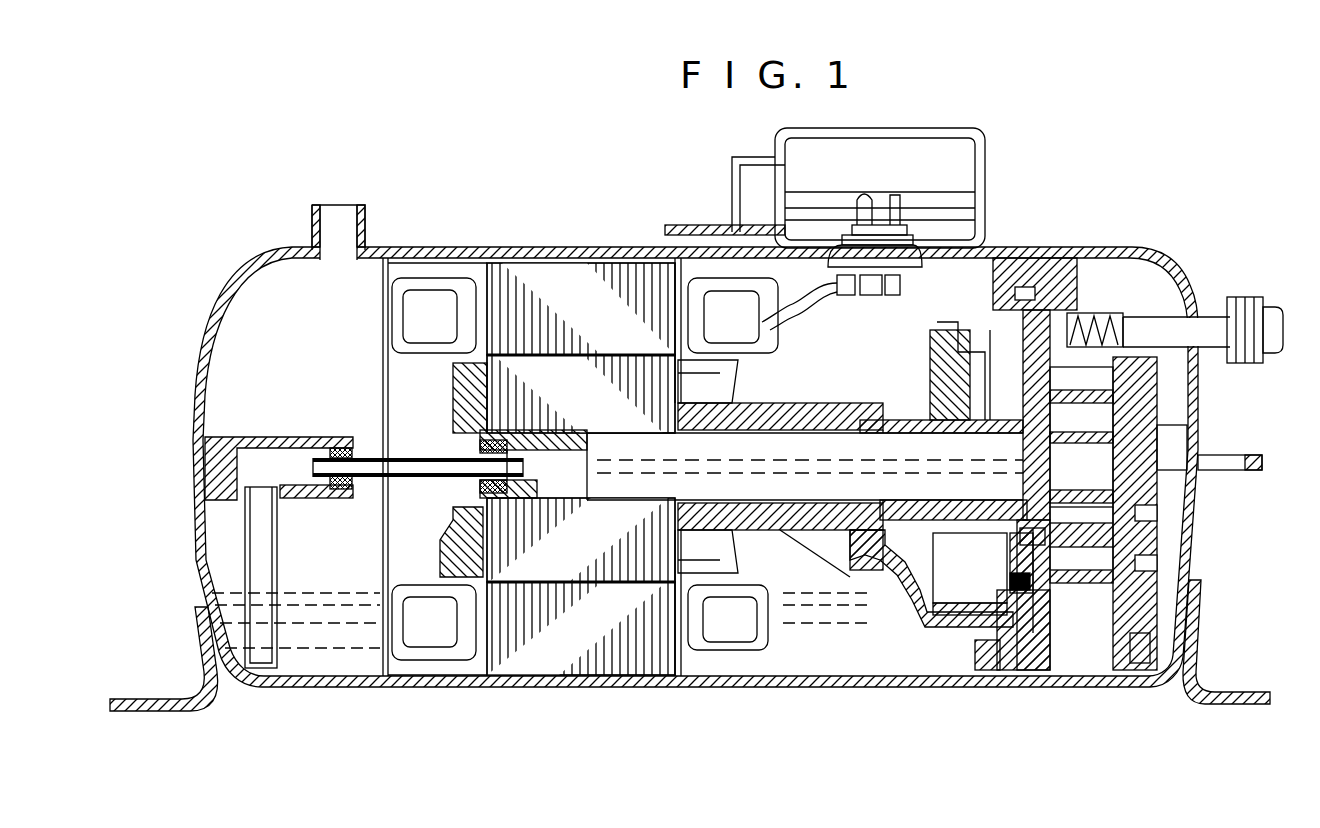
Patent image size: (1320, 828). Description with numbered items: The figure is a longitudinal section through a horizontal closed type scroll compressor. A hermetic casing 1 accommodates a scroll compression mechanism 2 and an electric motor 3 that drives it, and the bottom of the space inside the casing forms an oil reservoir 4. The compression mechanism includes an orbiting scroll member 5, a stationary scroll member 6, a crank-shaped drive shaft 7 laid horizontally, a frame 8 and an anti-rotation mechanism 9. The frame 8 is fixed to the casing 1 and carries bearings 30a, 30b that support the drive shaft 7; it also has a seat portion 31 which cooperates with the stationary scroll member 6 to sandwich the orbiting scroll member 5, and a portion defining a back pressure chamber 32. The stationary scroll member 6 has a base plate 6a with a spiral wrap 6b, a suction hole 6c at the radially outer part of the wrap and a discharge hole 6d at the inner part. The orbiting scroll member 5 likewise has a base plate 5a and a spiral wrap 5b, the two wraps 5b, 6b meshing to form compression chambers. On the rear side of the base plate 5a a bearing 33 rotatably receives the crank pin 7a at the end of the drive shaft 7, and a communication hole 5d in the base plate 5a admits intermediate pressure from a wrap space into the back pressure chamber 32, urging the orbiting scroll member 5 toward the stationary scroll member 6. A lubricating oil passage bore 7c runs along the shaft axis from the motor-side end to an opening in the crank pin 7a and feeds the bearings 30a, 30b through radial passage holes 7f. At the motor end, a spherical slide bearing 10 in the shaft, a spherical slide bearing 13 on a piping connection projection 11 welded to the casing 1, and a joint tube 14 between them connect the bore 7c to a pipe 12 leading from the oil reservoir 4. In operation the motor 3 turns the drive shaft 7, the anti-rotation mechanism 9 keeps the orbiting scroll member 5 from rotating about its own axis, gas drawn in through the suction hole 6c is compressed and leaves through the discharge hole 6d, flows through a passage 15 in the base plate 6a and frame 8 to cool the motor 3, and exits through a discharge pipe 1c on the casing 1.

The hermetic casing 1 is at (806, 688).
The discharge pipe 1c is at (365, 212).
The scroll compression mechanism 2 is at (1160, 383).
The electric motor 3 is at (578, 290).
The oil reservoir 4 is at (310, 667).
The orbiting scroll member 5 is at (1050, 677).
The base plate 5a is at (1036, 316).
The spiral wrap 5b is at (1057, 481).
The communication hole 5d is at (1033, 538).
The stationary scroll member 6 is at (1157, 533).
The base plate 6a is at (1148, 513).
The spiral wrap 6b is at (1153, 563).
The suction hole 6c is at (1093, 290).
The discharge hole 6d is at (1160, 447).
The crank-shaped drive shaft 7 is at (778, 485).
The crank pin 7a is at (921, 358).
The lubricating oil passage bore 7c is at (815, 462).
The radial passage holes 7f is at (693, 447).
The frame 8 is at (1031, 633).
The anti-rotation mechanism 9 is at (998, 301).
The spherical slide bearing 10 is at (453, 440).
The piping connection projection 11 is at (313, 488).
The pipe 12 is at (243, 560).
The spherical slide bearing 13 is at (362, 488).
The joint tube 14 is at (408, 482).
The passage 15 is at (1008, 256).
The bearing 30a is at (898, 583).
The bearing 30b is at (738, 590).
The seat portion 31 is at (988, 660).
The back pressure chamber 32 is at (960, 612).
The bearing 33 is at (970, 568).